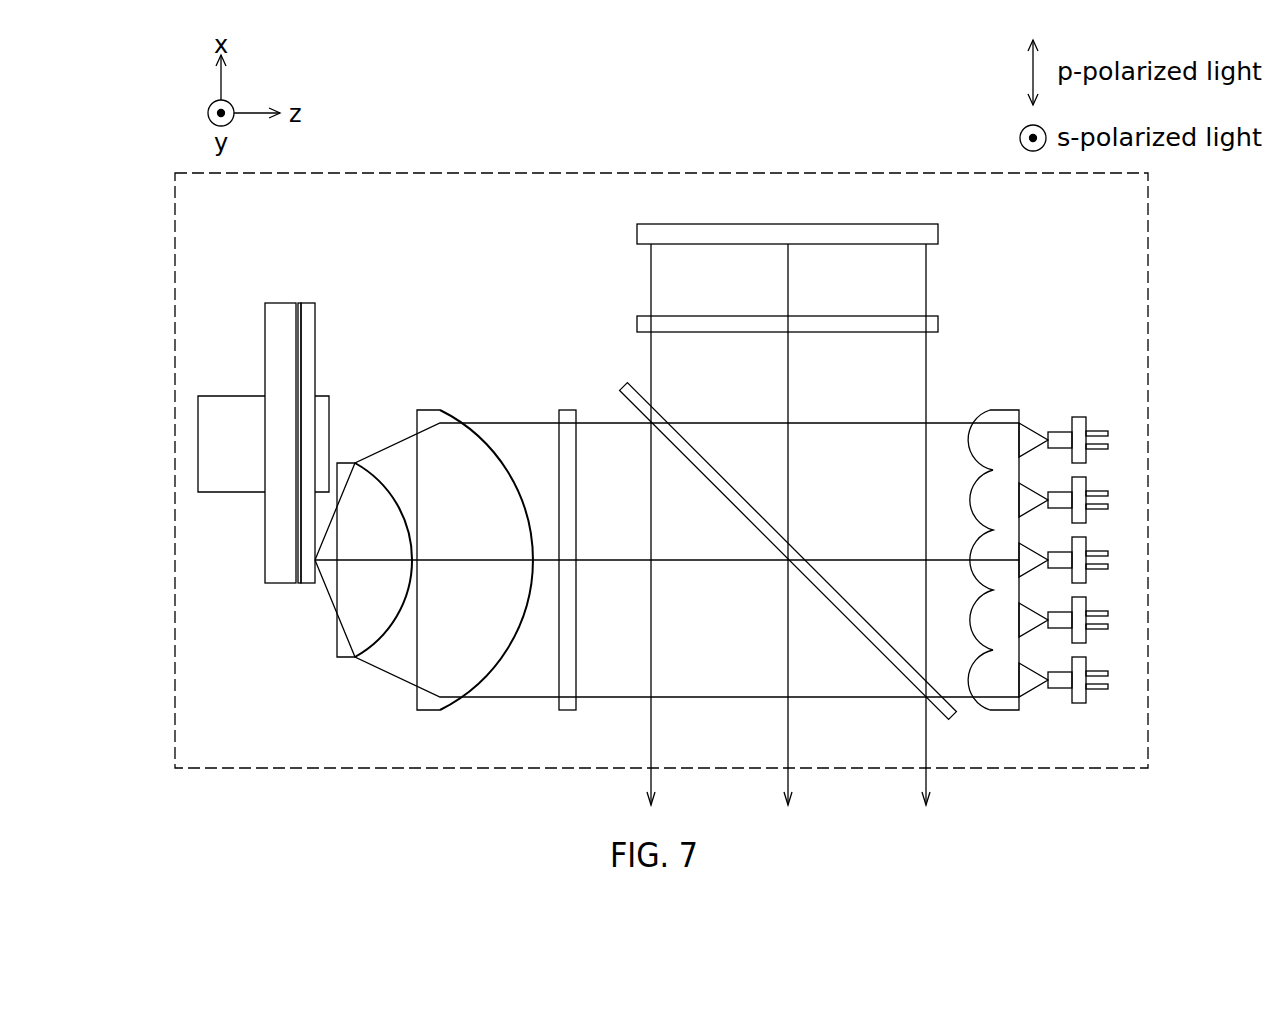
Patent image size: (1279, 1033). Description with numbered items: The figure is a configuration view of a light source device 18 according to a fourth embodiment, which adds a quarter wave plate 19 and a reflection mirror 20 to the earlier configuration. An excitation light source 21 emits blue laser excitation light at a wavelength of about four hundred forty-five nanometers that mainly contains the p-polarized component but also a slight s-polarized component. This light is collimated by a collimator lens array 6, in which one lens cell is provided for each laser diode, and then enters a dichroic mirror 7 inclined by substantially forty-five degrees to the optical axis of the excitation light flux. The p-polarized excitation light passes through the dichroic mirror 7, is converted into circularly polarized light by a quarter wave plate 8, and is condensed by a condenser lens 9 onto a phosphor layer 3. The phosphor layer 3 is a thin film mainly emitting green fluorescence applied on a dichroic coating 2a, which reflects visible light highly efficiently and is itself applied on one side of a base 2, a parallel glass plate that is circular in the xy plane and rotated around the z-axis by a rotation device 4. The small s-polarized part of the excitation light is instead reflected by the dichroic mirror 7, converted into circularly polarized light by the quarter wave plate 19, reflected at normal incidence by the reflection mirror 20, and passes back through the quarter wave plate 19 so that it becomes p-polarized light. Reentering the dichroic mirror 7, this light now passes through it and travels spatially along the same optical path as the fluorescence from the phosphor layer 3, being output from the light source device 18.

The light source device 18 is at (408, 173).
The base 2 is at (276, 303).
The dichroic coating 2a is at (299, 303).
The phosphor layer 3 is at (308, 303).
The rotation device 4 is at (232, 396).
The condenser lens 9 is at (343, 463).
The quarter wave plate 8 is at (567, 410).
The dichroic mirror 7 is at (628, 387).
The reflection mirror 20 is at (940, 233).
The quarter wave plate 19 is at (940, 322).
The collimator lens array 6 is at (1005, 410).
The excitation light source 21 is at (1078, 417).